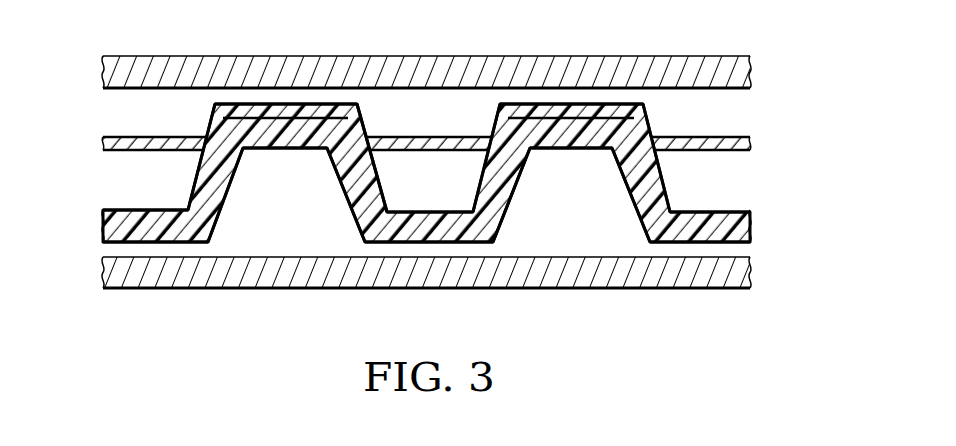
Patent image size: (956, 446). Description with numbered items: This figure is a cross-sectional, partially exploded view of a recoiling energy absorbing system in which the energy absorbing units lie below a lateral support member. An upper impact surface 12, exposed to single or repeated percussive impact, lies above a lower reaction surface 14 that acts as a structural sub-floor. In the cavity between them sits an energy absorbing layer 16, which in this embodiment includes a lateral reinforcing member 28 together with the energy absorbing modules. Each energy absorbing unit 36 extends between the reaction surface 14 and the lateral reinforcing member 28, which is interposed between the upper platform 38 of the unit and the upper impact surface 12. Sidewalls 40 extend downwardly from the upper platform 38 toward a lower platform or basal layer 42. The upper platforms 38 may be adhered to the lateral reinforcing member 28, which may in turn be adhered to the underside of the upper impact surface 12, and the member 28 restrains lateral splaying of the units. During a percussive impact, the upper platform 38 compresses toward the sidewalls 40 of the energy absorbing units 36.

The upper impact surface 12 is at (752, 73).
The lower reaction surface 14 is at (752, 273).
The energy absorbing layer 16 is at (767, 107).
The lateral reinforcing member 28 is at (408, 137).
The energy absorbing unit 36 is at (493, 297).
The upper platform 38 is at (572, 130).
The sidewall 40 is at (483, 182).
The lower platform 42 is at (415, 226).